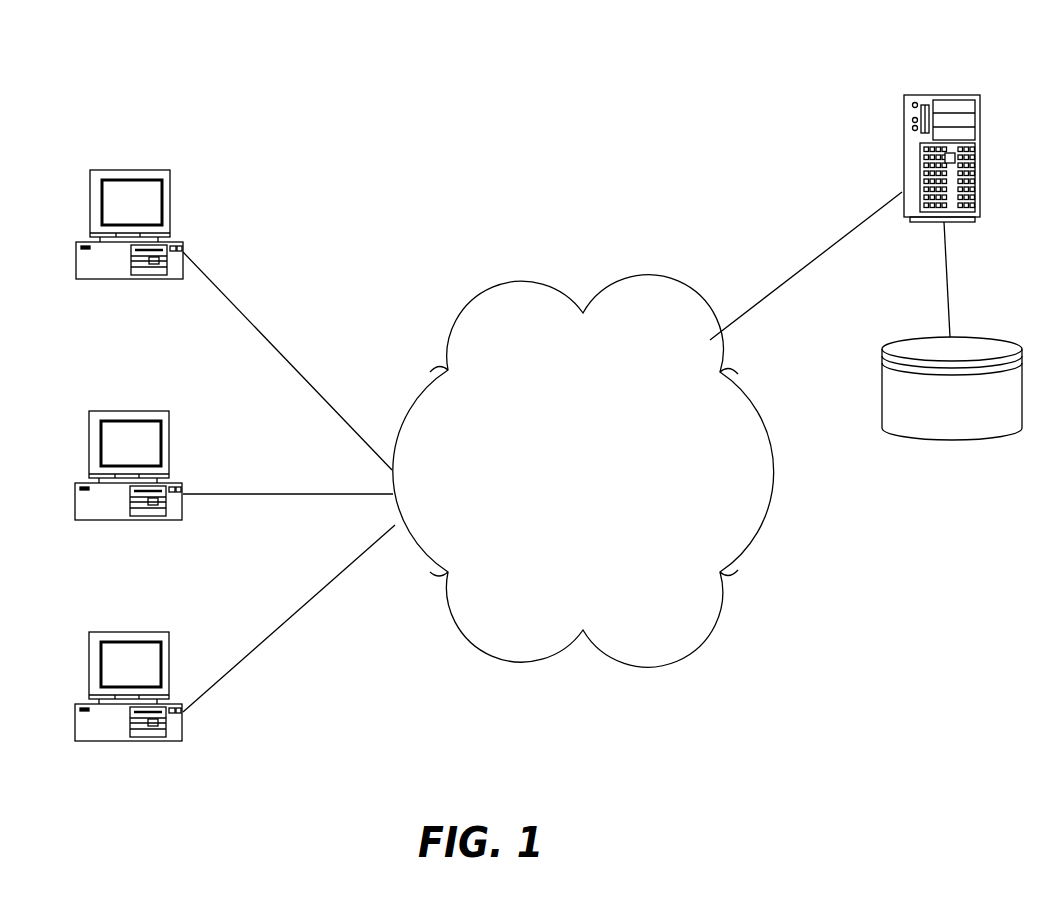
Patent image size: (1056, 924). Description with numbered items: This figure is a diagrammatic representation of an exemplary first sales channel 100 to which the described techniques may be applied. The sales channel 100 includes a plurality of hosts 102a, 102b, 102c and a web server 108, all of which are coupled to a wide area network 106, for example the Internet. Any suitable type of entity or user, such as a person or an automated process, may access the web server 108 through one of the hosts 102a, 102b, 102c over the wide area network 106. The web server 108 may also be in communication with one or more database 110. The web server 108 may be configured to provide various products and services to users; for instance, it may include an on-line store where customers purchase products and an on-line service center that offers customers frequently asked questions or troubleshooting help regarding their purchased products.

The first sales channel 100 is at (379, 36).
The host 102a is at (112, 170).
The host 102b is at (112, 412).
The host 102c is at (108, 633).
The wide area network (WAN) 106 is at (523, 268).
The web server 108 is at (902, 132).
The database 110 is at (950, 443).